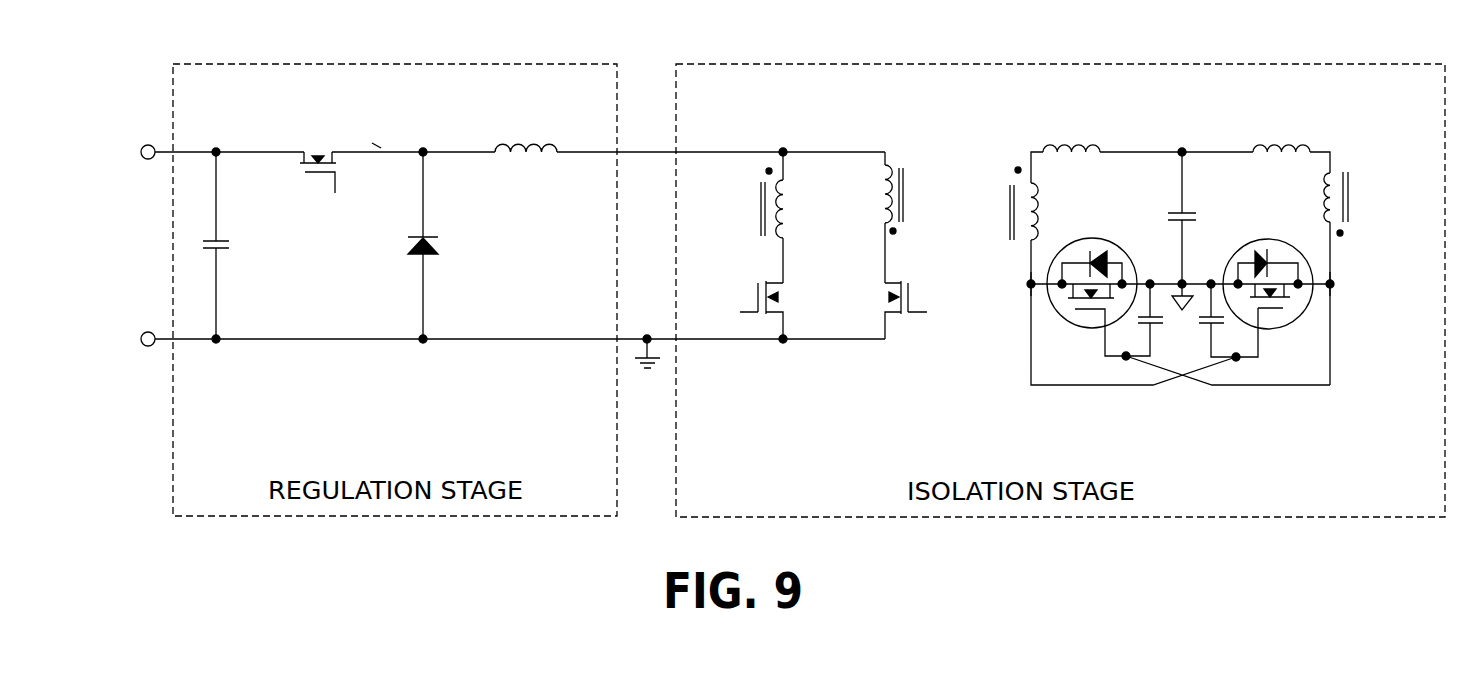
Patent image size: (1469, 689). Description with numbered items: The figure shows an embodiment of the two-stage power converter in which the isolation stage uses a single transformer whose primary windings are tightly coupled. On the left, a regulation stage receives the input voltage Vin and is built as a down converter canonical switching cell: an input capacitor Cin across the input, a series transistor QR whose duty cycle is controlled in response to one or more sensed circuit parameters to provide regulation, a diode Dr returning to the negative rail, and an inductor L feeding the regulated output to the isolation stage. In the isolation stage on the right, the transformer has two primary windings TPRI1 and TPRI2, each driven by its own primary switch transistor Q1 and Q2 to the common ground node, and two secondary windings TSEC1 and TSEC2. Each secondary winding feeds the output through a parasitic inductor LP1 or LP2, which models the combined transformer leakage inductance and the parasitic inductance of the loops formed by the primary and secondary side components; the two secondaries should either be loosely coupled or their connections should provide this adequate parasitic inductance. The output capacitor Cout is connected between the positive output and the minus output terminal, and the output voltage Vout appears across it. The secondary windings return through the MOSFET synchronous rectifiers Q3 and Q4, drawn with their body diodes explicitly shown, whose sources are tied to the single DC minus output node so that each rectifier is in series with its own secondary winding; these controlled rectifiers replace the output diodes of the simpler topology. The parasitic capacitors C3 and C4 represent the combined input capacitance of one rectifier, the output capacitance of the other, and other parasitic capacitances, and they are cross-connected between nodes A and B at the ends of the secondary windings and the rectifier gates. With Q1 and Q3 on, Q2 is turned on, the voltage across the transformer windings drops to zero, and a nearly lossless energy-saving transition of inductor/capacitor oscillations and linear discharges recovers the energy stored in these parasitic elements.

The input voltage Vin is at (127, 245).
The capacitor Cin is at (238, 245).
The transistor QR is at (329, 173).
The diode Dr is at (442, 245).
The inductor L is at (526, 129).
The primary winding TPRI1 is at (733, 203).
The primary winding TPRI2 is at (849, 199).
The primary switch transistor Q1 is at (782, 310).
The primary switch transistor Q2 is at (917, 310).
The secondary winding TSEC1 is at (982, 203).
The secondary winding TSEC2 is at (1374, 204).
The parasitic inductor LP1 is at (1071, 124).
The parasitic inductor LP2 is at (1281, 124).
The output capacitor Cout is at (1141, 218).
The output voltage Vout is at (1212, 242).
The MOSFET synchronous rectifier Q3 is at (1092, 283).
The MOSFET synchronous rectifier Q4 is at (1270, 287).
The parasitic capacitor C3 is at (1138, 320).
The parasitic capacitor C4 is at (1223, 320).
The node A is at (1016, 282).
The node B is at (1345, 284).